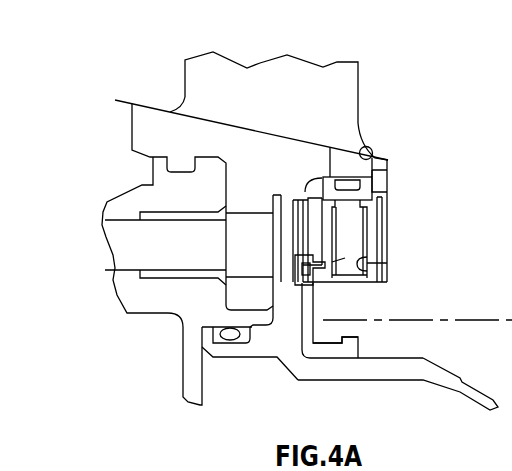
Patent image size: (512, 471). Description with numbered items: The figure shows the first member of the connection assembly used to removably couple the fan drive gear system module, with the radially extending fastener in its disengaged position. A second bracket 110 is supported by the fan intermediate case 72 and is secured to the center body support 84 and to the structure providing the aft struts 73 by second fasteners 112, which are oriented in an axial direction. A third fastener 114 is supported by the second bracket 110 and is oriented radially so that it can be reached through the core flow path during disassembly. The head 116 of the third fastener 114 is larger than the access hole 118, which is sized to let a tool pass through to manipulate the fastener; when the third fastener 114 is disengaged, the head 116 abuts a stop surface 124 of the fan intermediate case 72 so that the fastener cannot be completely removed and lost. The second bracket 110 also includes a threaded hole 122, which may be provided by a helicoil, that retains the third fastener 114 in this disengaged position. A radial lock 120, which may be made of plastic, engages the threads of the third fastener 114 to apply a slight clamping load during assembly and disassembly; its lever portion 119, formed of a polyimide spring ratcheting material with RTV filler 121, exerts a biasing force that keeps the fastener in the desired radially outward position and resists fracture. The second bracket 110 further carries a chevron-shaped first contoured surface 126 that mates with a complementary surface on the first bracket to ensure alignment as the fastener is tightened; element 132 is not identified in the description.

The fan intermediate case 72 is at (130, 126).
The aft struts 73 is at (342, 90).
The center body support 84 is at (403, 370).
The second bracket 110 is at (300, 303).
The second fasteners 112 is at (195, 258).
The third fastener 114 is at (355, 232).
The head 116 is at (376, 187).
The access hole 118 is at (372, 147).
The lever portion 119 is at (345, 258).
The radial lock 120 is at (323, 283).
The RTV filler 121 is at (302, 265).
The threaded hole 122 is at (367, 262).
The stop surface 124 is at (323, 186).
The first contoured surface 126 is at (370, 282).
The tab 132 is at (335, 350).